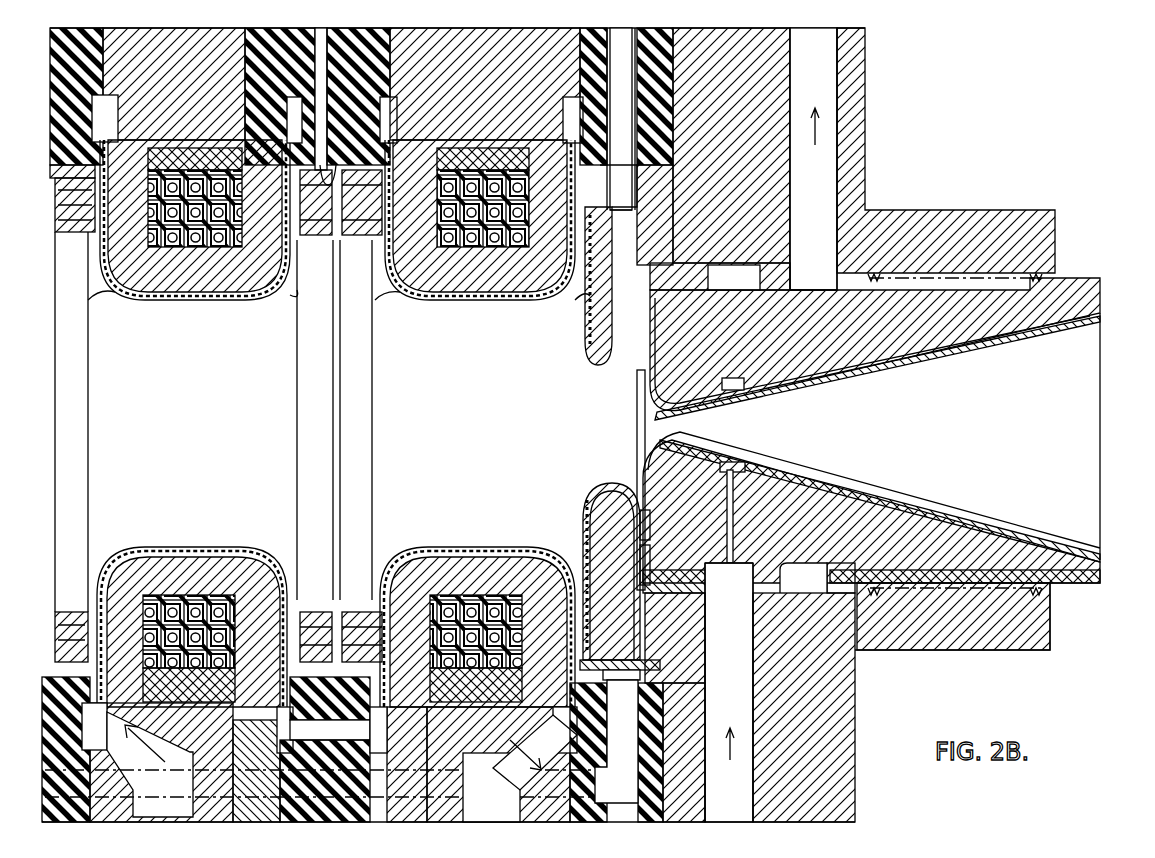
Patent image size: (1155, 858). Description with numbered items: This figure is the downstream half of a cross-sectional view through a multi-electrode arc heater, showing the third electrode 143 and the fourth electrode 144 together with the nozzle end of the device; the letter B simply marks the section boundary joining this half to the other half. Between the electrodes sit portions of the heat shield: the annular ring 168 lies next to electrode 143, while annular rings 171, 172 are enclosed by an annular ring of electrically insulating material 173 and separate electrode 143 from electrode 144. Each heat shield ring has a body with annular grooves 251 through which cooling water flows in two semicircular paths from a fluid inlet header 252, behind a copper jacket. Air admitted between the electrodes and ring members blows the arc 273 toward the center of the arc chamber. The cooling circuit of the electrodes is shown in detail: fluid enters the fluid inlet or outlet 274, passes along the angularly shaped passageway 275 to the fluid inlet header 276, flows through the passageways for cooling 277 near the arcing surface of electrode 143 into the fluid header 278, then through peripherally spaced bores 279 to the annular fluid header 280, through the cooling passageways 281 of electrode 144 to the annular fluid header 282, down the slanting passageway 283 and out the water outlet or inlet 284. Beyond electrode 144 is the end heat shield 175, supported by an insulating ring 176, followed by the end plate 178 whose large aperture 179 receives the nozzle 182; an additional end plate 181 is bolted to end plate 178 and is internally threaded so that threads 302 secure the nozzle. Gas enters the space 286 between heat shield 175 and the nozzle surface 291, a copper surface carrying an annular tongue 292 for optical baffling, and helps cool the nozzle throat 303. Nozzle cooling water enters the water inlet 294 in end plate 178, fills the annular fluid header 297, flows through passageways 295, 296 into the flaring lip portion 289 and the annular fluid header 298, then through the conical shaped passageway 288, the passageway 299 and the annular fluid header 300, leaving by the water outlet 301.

The third electrode 143 is at (212, 300).
The fourth electrode 144 is at (488, 292).
The annular ring of heat shield 168 is at (70, 236).
The annular ring of heat shield 171 is at (316, 213).
The annular ring of heat shield 172 is at (362, 213).
The annular ring of electrically insulating material 173 is at (370, 805).
The end heat shield 175 is at (600, 478).
The ring of electrically insulating material 176 is at (655, 28).
The end plate 178 is at (855, 680).
The aperture 179 is at (803, 578).
The end plate 181 is at (1000, 650).
The nozzle 182 is at (1100, 572).
The annular grooves 251 is at (330, 162).
The fluid inlet header 252 is at (327, 80).
The arc 273 is at (320, 300).
The fluid inlet or outlet 274 is at (182, 745).
The angularly-shaped passageway 275 is at (160, 780).
The fluid inlet header 276 is at (98, 720).
The passageways for cooling 277 is at (213, 547).
The fluid header 278 is at (280, 760).
The peripherally-spaced bores 279 is at (310, 740).
The annular fluid header 280 is at (378, 750).
The passageways for cooling fluid 281 is at (495, 547).
The annular fluid header 282 is at (565, 718).
The slanting passageway 283 is at (478, 790).
The water outlet or inlet 284 is at (445, 800).
The space 286 is at (625, 378).
The conical-shaped passageway 288 is at (880, 478).
The flaring lip portion 289 is at (652, 545).
The nozzle surface 291 is at (805, 478).
The annular tongue 292 is at (652, 520).
The water inlet 294 is at (745, 742).
The passageway 295 is at (680, 570).
The passageway 296 is at (735, 515).
The annular fluid header 297 is at (733, 590).
The annular fluid header 298 is at (745, 396).
The passageway 299 is at (945, 575).
The annular fluid header 300 is at (810, 282).
The water outlet 301 is at (838, 65).
The threads 302 is at (1050, 590).
The nozzle throat 303 is at (662, 410).
The housing section B is at (865, 158).